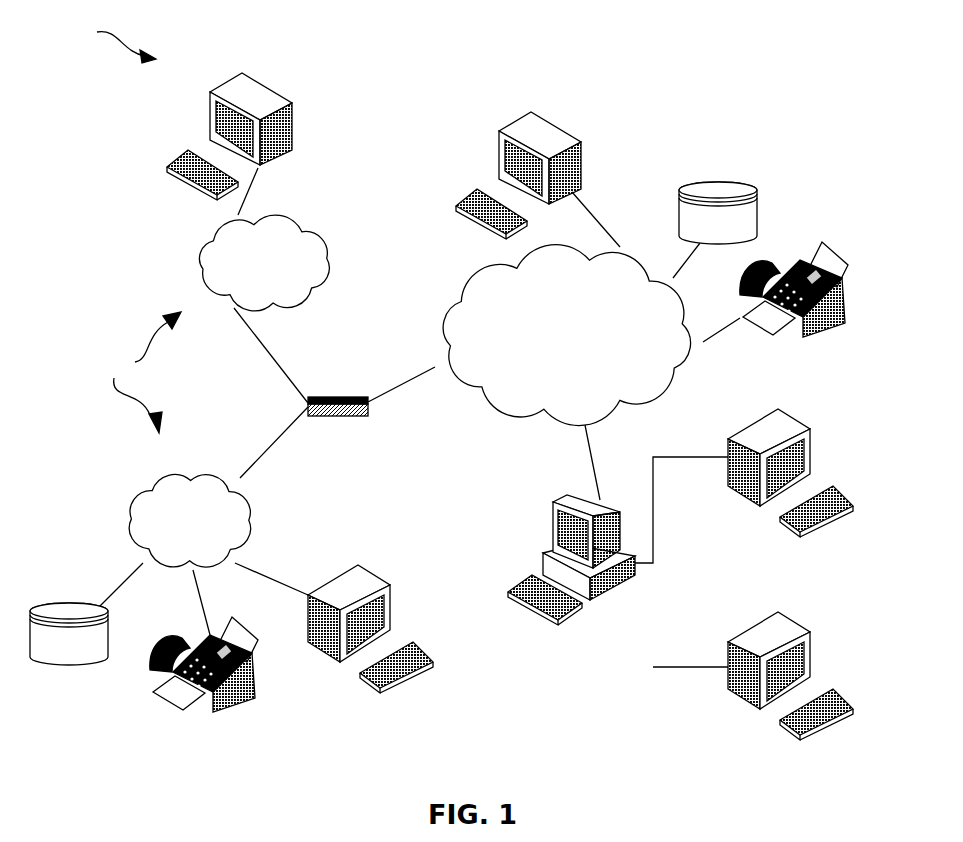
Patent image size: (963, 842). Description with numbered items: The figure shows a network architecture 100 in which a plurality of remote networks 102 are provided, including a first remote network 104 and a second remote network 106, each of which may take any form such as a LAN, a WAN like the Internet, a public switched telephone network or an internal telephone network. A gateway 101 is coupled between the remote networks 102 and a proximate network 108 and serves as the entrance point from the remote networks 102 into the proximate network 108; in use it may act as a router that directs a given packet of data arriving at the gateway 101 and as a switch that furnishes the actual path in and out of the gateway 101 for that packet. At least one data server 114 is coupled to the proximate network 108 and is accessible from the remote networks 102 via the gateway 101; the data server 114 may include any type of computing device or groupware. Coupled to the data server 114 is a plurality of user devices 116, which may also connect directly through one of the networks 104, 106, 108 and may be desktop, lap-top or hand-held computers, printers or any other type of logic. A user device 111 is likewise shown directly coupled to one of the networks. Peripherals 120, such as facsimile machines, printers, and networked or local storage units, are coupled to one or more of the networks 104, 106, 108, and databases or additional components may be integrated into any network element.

The architecture 100 is at (107, 43).
The gateway 101 is at (326, 396).
The remote networks 102 is at (140, 372).
The first remote network 104 is at (125, 500).
The second remote network 106 is at (330, 235).
The proximate network 108 is at (668, 396).
The user device 111 is at (580, 143).
The data server 114 is at (553, 522).
The user devices 116 is at (292, 110).
The peripheral 120 is at (72, 665).